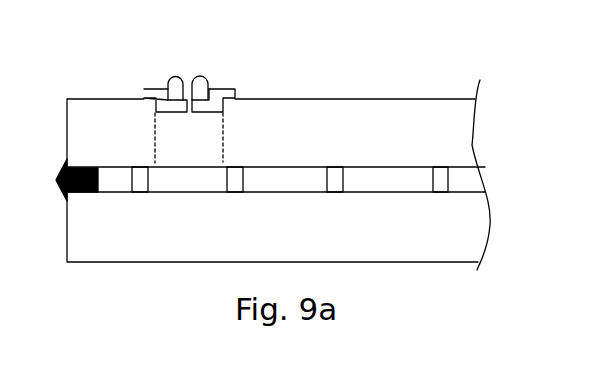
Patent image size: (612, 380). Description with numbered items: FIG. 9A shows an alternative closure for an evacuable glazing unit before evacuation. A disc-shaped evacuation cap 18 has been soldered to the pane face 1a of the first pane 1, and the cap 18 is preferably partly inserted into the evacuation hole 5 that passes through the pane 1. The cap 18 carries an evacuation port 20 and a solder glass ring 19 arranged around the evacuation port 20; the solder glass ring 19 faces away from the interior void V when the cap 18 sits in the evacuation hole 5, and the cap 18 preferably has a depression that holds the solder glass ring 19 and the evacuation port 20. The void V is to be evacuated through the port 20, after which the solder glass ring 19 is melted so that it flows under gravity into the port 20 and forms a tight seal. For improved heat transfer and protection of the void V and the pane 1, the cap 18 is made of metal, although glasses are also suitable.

The first pane 1 is at (460, 135).
The pane face 1a is at (424, 99).
The evacuation hole 5 is at (224, 144).
The evacuation cap 18 is at (233, 92).
The solder glass ring 19 is at (203, 82).
The evacuation port 20 is at (186, 114).
The interior void V is at (163, 180).